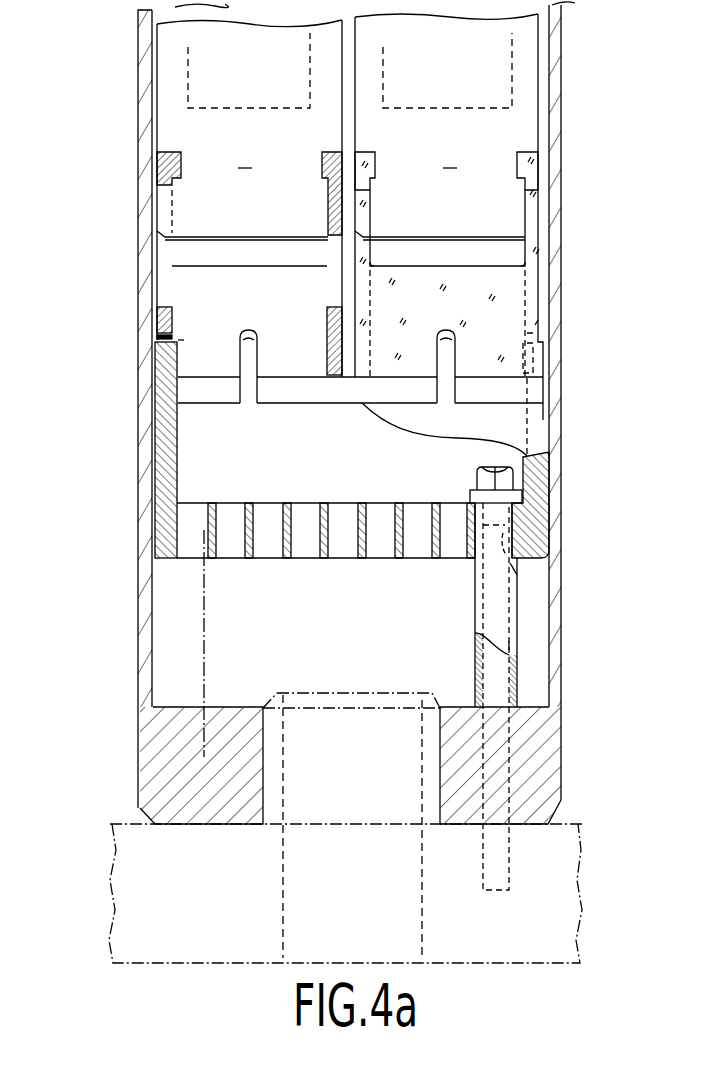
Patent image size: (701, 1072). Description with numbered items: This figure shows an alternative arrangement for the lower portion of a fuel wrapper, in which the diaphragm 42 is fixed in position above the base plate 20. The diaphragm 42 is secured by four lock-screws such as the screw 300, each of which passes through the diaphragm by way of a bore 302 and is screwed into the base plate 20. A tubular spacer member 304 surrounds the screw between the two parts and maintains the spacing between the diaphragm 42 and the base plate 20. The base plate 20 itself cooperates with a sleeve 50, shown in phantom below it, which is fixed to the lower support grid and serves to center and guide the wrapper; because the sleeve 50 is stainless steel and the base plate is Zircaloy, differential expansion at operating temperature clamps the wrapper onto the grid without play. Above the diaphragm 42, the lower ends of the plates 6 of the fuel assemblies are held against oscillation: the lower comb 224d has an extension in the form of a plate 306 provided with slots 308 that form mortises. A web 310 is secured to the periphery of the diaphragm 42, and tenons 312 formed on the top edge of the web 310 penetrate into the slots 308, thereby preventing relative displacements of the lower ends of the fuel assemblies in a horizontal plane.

The plates 6 is at (350, 235).
The base plate 20 is at (537, 770).
The diaphragm 42 is at (548, 537).
The sleeve 50 is at (426, 708).
The lower comb 224d is at (165, 166).
The lock-screw 300 is at (470, 489).
The bore 302 is at (514, 570).
The tubular spacer member 304 is at (513, 641).
The plate 306 is at (154, 320).
The slots 308 is at (178, 338).
The web 310 is at (185, 488).
The tenons 312 is at (262, 383).